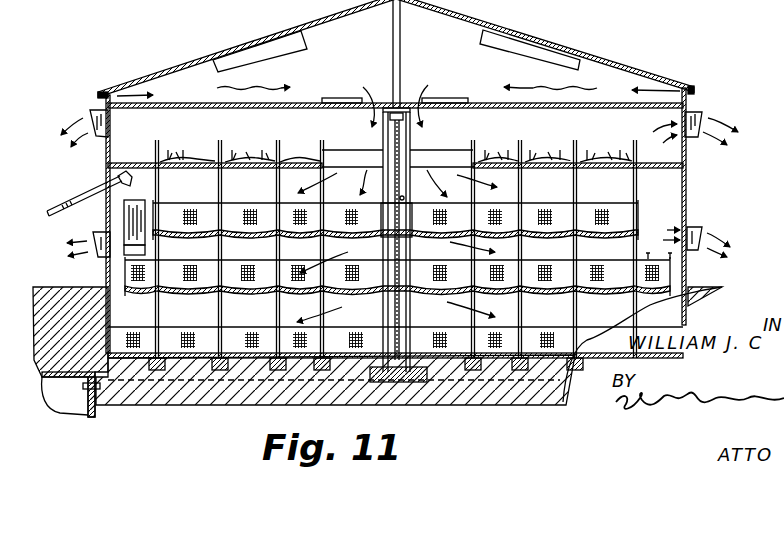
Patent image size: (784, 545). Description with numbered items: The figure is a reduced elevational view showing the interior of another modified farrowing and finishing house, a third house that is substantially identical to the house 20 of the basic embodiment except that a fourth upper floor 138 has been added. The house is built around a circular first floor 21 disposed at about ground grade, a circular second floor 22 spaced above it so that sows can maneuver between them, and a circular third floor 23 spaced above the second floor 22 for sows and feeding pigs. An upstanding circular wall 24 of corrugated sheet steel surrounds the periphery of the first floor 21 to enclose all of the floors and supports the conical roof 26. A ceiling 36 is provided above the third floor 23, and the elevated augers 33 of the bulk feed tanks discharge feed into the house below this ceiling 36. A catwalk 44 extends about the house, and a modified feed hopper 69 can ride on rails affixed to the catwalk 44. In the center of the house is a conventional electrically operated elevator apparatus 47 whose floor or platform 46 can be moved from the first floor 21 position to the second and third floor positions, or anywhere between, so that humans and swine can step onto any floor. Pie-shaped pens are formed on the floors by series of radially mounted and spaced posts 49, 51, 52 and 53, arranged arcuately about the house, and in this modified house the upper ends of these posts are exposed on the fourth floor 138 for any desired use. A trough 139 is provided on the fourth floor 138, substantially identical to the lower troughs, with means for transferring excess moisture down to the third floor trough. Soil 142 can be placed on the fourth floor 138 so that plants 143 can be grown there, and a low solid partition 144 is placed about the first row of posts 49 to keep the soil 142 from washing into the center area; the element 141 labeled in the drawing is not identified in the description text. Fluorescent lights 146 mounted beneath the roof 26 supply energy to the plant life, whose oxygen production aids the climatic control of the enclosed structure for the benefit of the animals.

The conical roof 26 is at (197, 60).
The farrowing and finishing house 20 is at (617, 46).
The fluorescent lights 146 is at (303, 45).
The ceiling 36 is at (303, 101).
The fourth upper floor 138 is at (140, 163).
The low solid partition 144 is at (330, 153).
The plants 143 is at (207, 153).
The soil 142 is at (248, 160).
The trough 139 is at (495, 158).
The material pile 141 is at (473, 145).
The elevator apparatus 47 is at (381, 140).
The first floor 21 is at (233, 350).
The third floor 23 is at (207, 232).
The elevator floor 46 is at (430, 238).
The second floor 22 is at (208, 293).
The fence post 49 is at (473, 255).
The fence post 51 is at (530, 244).
The fence post 52 is at (578, 244).
The fence post 53 is at (632, 243).
The catwalk 44 is at (656, 252).
The auger 33 is at (77, 186).
The feed hopper 69 is at (118, 219).
The circular wall 24 is at (688, 273).